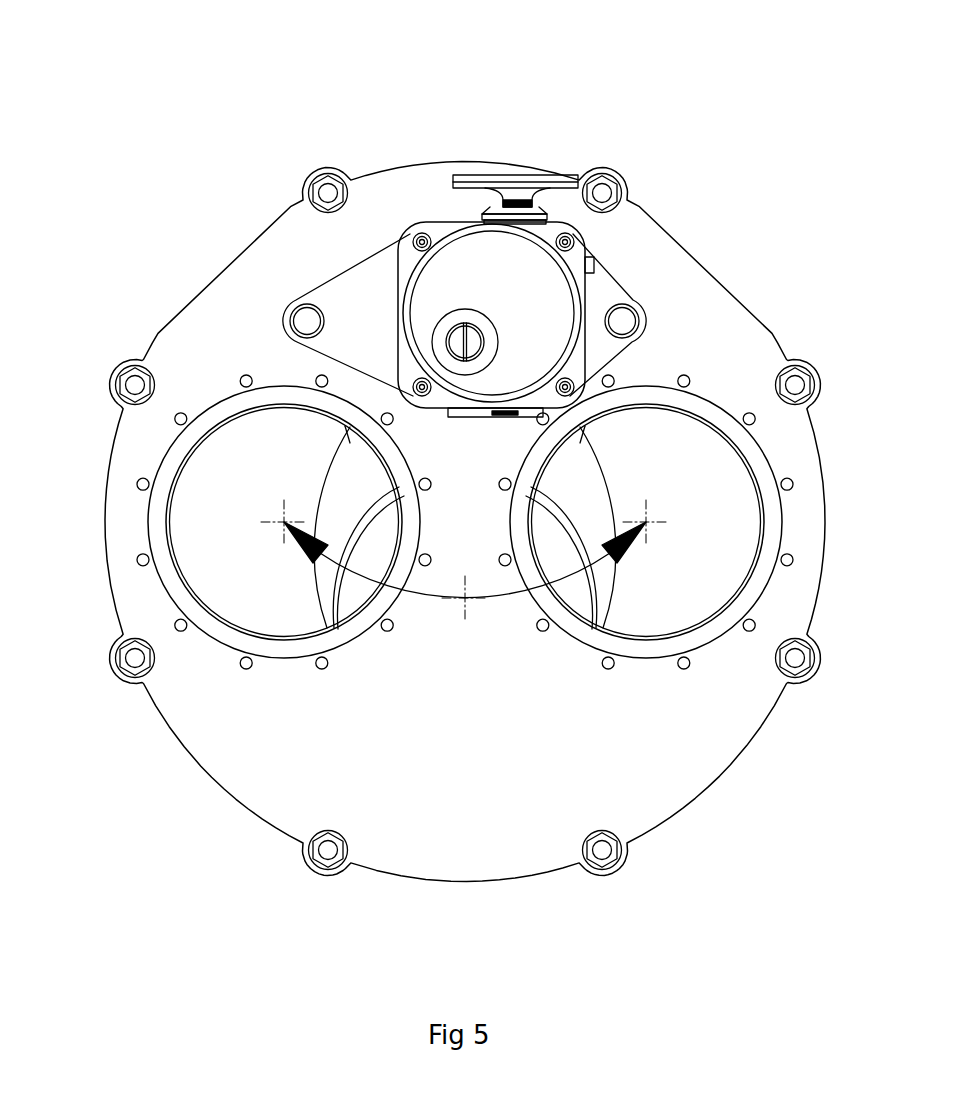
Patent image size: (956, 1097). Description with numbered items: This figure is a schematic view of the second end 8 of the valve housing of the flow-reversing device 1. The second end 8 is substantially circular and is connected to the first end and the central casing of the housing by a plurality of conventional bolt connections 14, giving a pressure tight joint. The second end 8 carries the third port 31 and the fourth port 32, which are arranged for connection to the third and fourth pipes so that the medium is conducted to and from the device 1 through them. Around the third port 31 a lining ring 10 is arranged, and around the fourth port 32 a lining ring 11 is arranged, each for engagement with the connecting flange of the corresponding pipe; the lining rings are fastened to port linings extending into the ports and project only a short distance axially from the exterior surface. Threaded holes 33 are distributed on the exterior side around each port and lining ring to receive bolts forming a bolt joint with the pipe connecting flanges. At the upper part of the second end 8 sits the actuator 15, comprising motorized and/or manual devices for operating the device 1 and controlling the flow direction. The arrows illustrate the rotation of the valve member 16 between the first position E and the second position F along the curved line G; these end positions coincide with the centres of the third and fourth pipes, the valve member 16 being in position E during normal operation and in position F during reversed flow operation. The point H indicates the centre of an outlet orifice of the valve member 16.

The device 1 is at (558, 74).
The second end 8 is at (530, 870).
The lining ring 10 is at (687, 402).
The lining ring 11 is at (282, 397).
The bolt connection 14 is at (332, 853).
The actuator 15 is at (480, 253).
The valve member 16 is at (340, 483).
The third port 31 is at (703, 442).
The fourth port 32 is at (223, 440).
The threaded hole 33 is at (322, 664).
The first position E is at (646, 522).
The second position F is at (285, 523).
The curved line G is at (585, 572).
The point H is at (465, 600).